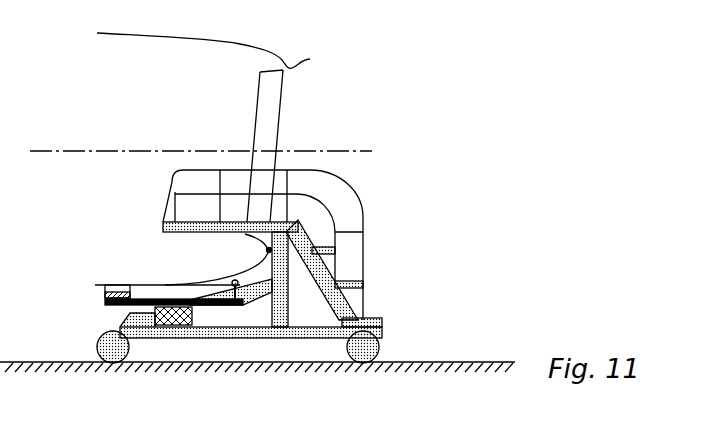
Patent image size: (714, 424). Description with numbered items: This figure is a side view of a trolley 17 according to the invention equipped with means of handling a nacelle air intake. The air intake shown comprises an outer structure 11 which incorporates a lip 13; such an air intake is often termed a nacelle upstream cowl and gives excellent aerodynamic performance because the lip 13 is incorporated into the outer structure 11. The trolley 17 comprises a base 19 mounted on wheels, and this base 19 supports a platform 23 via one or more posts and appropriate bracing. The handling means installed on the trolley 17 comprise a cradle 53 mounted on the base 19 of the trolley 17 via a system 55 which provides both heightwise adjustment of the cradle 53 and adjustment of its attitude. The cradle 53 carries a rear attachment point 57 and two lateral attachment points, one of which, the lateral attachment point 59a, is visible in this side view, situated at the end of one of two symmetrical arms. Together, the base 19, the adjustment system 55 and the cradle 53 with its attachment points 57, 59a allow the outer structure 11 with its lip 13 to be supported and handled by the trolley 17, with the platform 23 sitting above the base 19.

The outer structure 11 is at (241, 41).
The lip 13 is at (310, 59).
The trolley 17 is at (373, 182).
The platform 23 is at (180, 226).
The rear attachment point 57 is at (110, 292).
The system 55 is at (168, 300).
The lateral attachment point 59a is at (236, 278).
The cradle 53 is at (232, 314).
The base 19 is at (260, 338).